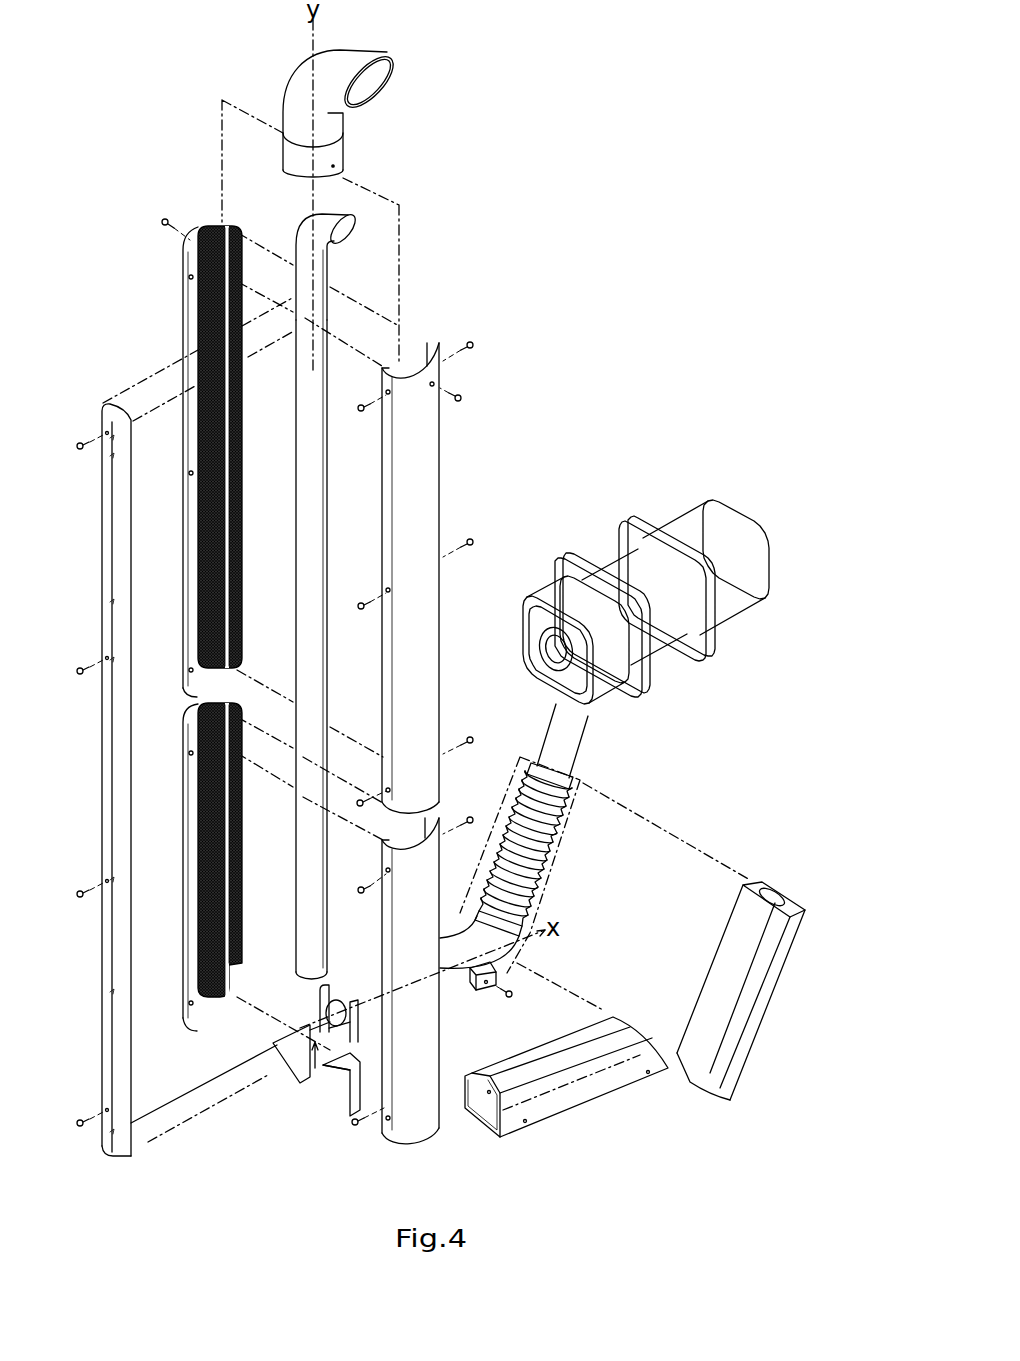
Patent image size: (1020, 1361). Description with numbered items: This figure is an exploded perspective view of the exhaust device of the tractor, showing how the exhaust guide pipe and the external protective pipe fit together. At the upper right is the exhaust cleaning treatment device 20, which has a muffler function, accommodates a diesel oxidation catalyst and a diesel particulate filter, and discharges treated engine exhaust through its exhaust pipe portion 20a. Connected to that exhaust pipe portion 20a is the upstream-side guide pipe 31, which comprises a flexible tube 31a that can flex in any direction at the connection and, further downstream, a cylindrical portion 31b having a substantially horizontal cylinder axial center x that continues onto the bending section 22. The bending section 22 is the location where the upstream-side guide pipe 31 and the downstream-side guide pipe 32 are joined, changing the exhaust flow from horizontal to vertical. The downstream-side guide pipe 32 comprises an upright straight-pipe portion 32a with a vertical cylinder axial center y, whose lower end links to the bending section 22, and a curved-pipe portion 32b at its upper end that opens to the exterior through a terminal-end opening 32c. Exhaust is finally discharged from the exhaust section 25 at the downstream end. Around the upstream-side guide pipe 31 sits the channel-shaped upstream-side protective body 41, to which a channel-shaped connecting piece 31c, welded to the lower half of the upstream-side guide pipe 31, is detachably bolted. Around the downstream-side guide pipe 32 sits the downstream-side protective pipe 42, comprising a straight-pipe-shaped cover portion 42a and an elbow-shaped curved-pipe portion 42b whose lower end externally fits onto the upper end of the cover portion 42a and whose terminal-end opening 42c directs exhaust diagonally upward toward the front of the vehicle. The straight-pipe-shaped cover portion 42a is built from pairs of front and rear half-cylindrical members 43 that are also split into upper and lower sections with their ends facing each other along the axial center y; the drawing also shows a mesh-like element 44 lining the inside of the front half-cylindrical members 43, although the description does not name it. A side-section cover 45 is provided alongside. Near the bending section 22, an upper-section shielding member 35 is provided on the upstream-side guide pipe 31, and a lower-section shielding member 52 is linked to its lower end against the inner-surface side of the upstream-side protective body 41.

The exhaust cleaning treatment device 20 is at (707, 510).
The exhaust pipe portion 20a is at (588, 742).
The bending section 22 is at (305, 1082).
The exhaust section 25 is at (440, 115).
The upstream-side guide pipe 31 is at (532, 918).
The flexible tube 31a is at (546, 857).
The cylindrical portion 31b is at (460, 985).
The connecting piece 31c is at (495, 970).
The downstream-side guide pipe 32 is at (314, 573).
The straight-pipe portion 32a is at (320, 633).
The curved-pipe portion 32b is at (305, 225).
The terminal-end opening 32c is at (350, 234).
The upper-section shielding member 35 is at (352, 985).
The upstream-side protective body 41 is at (766, 993).
The downstream-side protective pipe 42 is at (413, 617).
The straight-pipe-shaped cover portion 42a is at (425, 465).
The curved-pipe portion 42b is at (300, 70).
The terminal-end opening 42c is at (392, 78).
The half-cylindrical member 43 is at (198, 625).
The mesh filter 44 is at (238, 520).
The side-section cover 45 is at (100, 582).
The lower-section shielding member 52 is at (345, 1105).